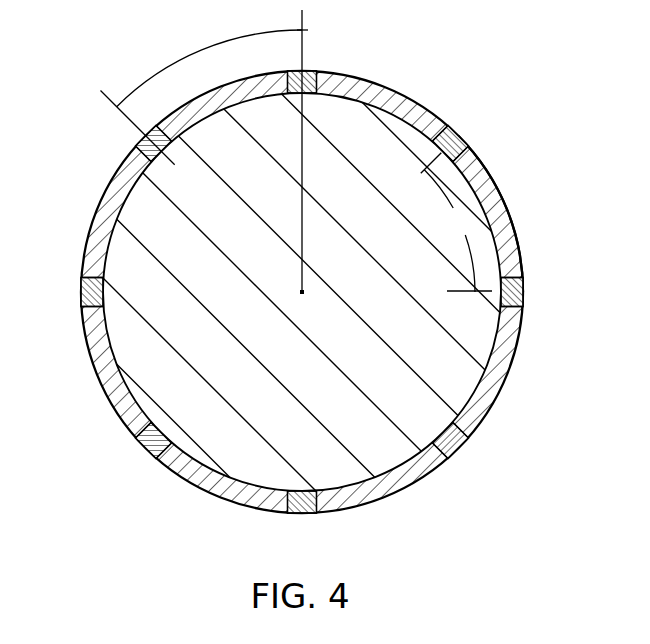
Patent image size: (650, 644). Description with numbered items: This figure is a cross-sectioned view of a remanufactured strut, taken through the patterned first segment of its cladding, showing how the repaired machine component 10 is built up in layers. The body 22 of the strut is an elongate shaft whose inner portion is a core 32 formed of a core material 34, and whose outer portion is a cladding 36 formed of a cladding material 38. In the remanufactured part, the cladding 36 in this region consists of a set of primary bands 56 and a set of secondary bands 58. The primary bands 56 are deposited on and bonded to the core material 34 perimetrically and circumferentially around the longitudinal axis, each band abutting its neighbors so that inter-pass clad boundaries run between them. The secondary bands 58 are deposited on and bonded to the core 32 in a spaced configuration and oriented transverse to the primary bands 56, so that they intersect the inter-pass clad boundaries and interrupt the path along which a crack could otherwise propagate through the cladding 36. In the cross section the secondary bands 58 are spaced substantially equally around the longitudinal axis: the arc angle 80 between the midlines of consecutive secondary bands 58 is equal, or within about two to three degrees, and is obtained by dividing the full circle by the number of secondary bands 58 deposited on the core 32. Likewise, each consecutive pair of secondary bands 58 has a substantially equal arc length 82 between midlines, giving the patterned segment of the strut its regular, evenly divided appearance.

The machine component 10 is at (117, 170).
The body 22 is at (89, 355).
The core 32 is at (453, 382).
The core material 34 is at (476, 332).
The cladding 36 is at (360, 70).
The cladding material 38 is at (210, 478).
The primary bands 56 is at (489, 170).
The secondary bands 58 is at (460, 131).
The arc angle 80 is at (233, 39).
The arc length 82 is at (456, 222).